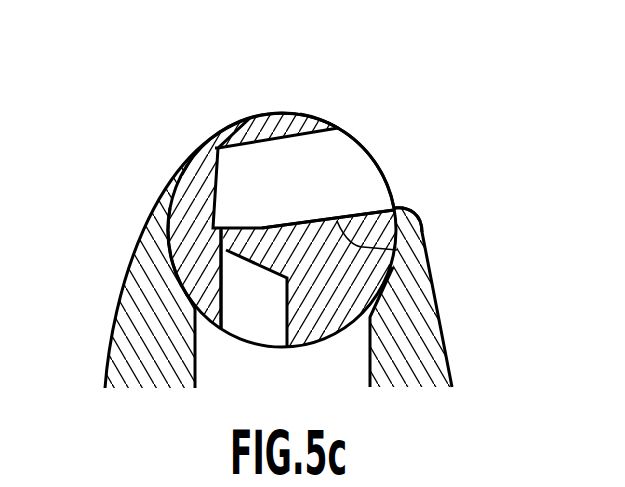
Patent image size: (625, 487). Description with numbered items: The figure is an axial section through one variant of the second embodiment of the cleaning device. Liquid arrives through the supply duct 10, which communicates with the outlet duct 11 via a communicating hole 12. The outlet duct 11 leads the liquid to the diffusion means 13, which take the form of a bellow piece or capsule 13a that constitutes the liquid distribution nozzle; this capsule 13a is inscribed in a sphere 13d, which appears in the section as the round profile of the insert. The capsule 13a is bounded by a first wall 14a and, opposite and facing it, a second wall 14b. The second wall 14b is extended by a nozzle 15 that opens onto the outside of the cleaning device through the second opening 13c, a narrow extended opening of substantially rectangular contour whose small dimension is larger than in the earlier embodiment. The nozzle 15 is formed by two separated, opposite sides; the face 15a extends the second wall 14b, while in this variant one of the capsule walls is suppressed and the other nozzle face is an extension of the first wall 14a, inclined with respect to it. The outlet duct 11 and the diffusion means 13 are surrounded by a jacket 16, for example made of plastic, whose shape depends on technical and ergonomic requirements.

The supply duct 10 is at (238, 303).
The outlet duct 11 is at (222, 240).
The communicating hole 12 is at (197, 273).
The diffusion means 13 is at (258, 174).
The capsule 13a is at (303, 199).
The second opening 13c is at (366, 148).
The sphere 13d is at (293, 116).
The first wall 14a is at (262, 223).
The second wall 14b is at (249, 116).
The nozzle 15 is at (400, 247).
The face of the nozzle 15a is at (311, 116).
The jacket 16 is at (417, 325).